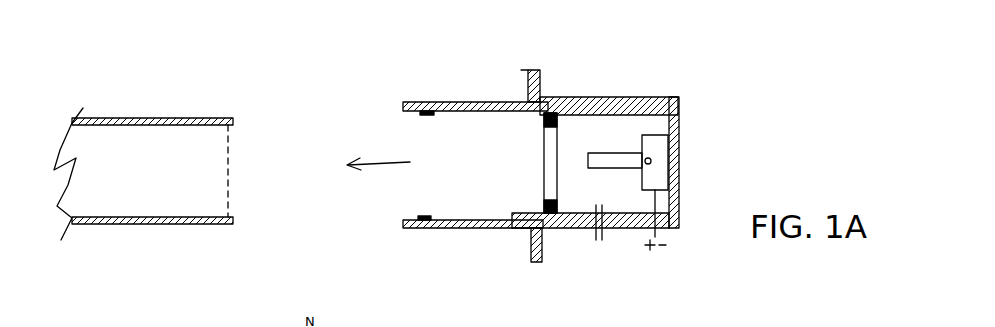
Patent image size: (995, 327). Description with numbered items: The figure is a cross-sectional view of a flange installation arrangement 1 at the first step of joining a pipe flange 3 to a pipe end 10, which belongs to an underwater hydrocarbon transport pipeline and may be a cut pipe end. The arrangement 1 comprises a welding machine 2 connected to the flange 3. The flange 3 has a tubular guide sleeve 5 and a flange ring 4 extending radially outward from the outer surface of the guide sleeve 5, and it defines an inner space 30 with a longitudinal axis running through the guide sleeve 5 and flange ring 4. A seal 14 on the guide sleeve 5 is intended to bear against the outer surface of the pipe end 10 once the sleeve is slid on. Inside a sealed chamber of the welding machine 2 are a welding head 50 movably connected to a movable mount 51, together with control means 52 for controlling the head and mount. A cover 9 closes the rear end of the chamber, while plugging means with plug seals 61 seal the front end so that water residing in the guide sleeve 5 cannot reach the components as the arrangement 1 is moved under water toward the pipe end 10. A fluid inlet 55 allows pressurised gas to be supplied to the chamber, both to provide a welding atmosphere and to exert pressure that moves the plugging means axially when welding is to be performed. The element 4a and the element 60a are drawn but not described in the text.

The flange installation arrangement 1 is at (557, 60).
The welding machine 2 is at (649, 139).
The pipe flange 3 is at (456, 136).
The flange ring 4 is at (534, 242).
The cap end wall 4a is at (680, 107).
The guide sleeve 5 is at (436, 102).
The cover 9 is at (680, 128).
The pipe end 10 is at (158, 114).
The seal 14 is at (420, 114).
The inner space 30 is at (412, 162).
The welding head 50 is at (600, 165).
The movable mount 51 is at (658, 172).
The control means 52 is at (677, 218).
The fluid inlet 55 is at (600, 240).
The sleeve 60a is at (509, 163).
The plug seals 61 is at (543, 118).